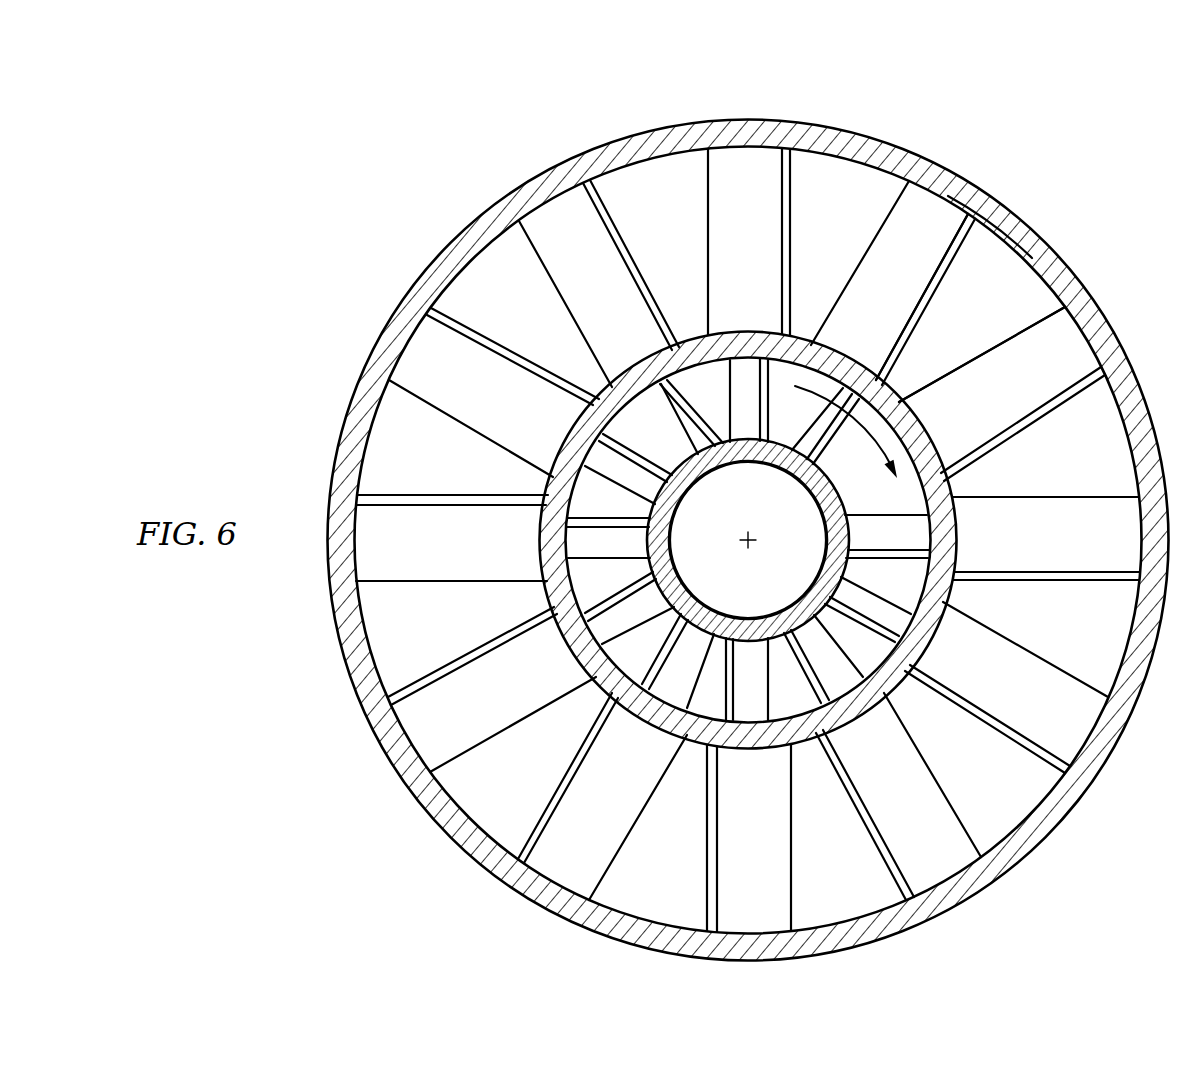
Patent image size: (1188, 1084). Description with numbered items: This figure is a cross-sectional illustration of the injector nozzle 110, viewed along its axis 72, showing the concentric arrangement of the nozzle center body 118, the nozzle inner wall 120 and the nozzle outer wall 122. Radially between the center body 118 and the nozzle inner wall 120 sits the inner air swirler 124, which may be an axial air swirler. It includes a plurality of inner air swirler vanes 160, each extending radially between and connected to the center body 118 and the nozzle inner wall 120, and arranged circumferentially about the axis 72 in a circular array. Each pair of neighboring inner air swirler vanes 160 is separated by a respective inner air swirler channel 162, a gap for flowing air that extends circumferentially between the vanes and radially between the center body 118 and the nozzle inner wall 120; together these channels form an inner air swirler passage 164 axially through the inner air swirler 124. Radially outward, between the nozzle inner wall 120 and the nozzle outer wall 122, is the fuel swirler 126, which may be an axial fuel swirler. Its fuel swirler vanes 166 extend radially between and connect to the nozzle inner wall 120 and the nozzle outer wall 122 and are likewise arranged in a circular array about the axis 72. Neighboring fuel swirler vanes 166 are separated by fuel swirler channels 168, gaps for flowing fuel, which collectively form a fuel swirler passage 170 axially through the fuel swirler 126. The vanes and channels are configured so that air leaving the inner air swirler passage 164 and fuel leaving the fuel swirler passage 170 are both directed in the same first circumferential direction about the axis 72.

The injector nozzle 110 is at (698, 501).
The nozzle center body 118 is at (670, 537).
The nozzle inner wall 120 is at (545, 598).
The nozzle outer wall 122 is at (332, 597).
The inner air swirler 124 is at (907, 585).
The fuel swirler 126 is at (953, 194).
The inner air swirler vanes 160 is at (797, 445).
The inner air swirler channel 162 is at (752, 347).
The inner air swirler passage 164 is at (905, 497).
The fuel swirler vanes 166 is at (888, 207).
The fuel swirler channel 168 is at (545, 310).
The fuel swirler passage 170 is at (1002, 291).
The axis 72 is at (750, 545).